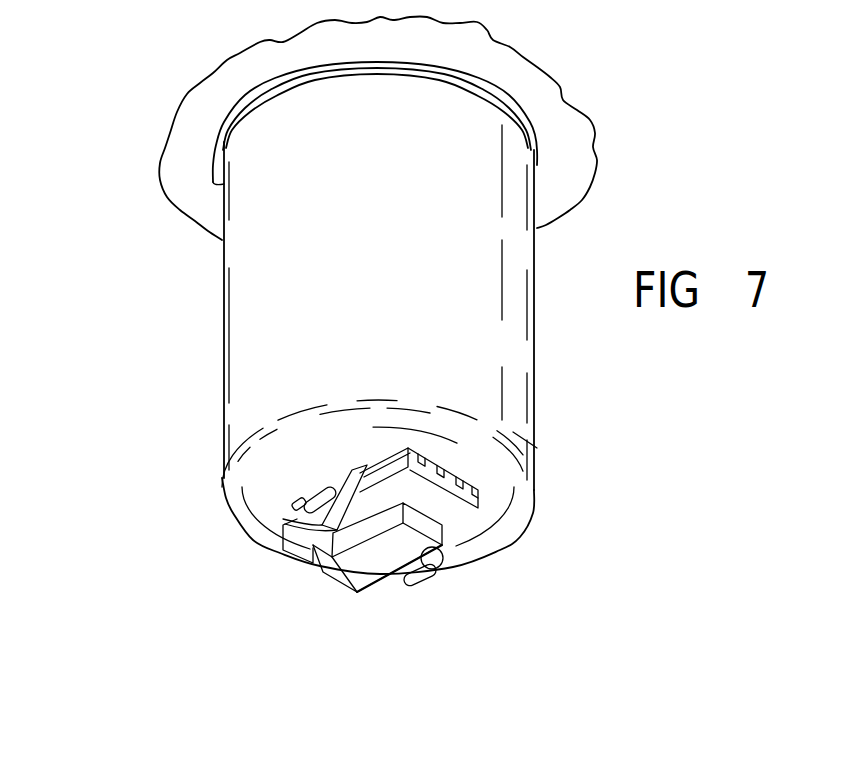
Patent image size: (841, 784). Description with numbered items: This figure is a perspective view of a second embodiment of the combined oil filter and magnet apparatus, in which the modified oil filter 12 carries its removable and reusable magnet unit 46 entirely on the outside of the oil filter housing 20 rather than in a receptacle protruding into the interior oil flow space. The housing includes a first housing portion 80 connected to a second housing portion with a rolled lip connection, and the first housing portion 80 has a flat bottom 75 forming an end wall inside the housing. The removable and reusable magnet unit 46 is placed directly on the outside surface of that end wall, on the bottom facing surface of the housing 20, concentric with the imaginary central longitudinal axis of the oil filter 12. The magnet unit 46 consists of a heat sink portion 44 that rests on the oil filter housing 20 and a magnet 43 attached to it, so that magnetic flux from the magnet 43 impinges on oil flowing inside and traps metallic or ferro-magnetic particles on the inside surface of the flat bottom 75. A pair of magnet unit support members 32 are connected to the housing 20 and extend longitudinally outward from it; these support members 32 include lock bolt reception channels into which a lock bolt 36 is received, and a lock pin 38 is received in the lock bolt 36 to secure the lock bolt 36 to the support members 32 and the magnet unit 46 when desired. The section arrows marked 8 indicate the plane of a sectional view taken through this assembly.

The oil filter 12 is at (123, 557).
The oil filter housing 20 is at (540, 304).
The first housing portion 80 is at (512, 358).
The flat bottom 75 is at (357, 447).
The magnet unit support members 32 is at (330, 447).
The lock pin 38 is at (238, 523).
The removable and reusable magnet unit 46 is at (472, 461).
The heat sink portion 44 is at (487, 500).
The magnet 43 is at (350, 582).
The lock bolt 36 is at (446, 570).
The section line 8- 8 is at (223, 548).